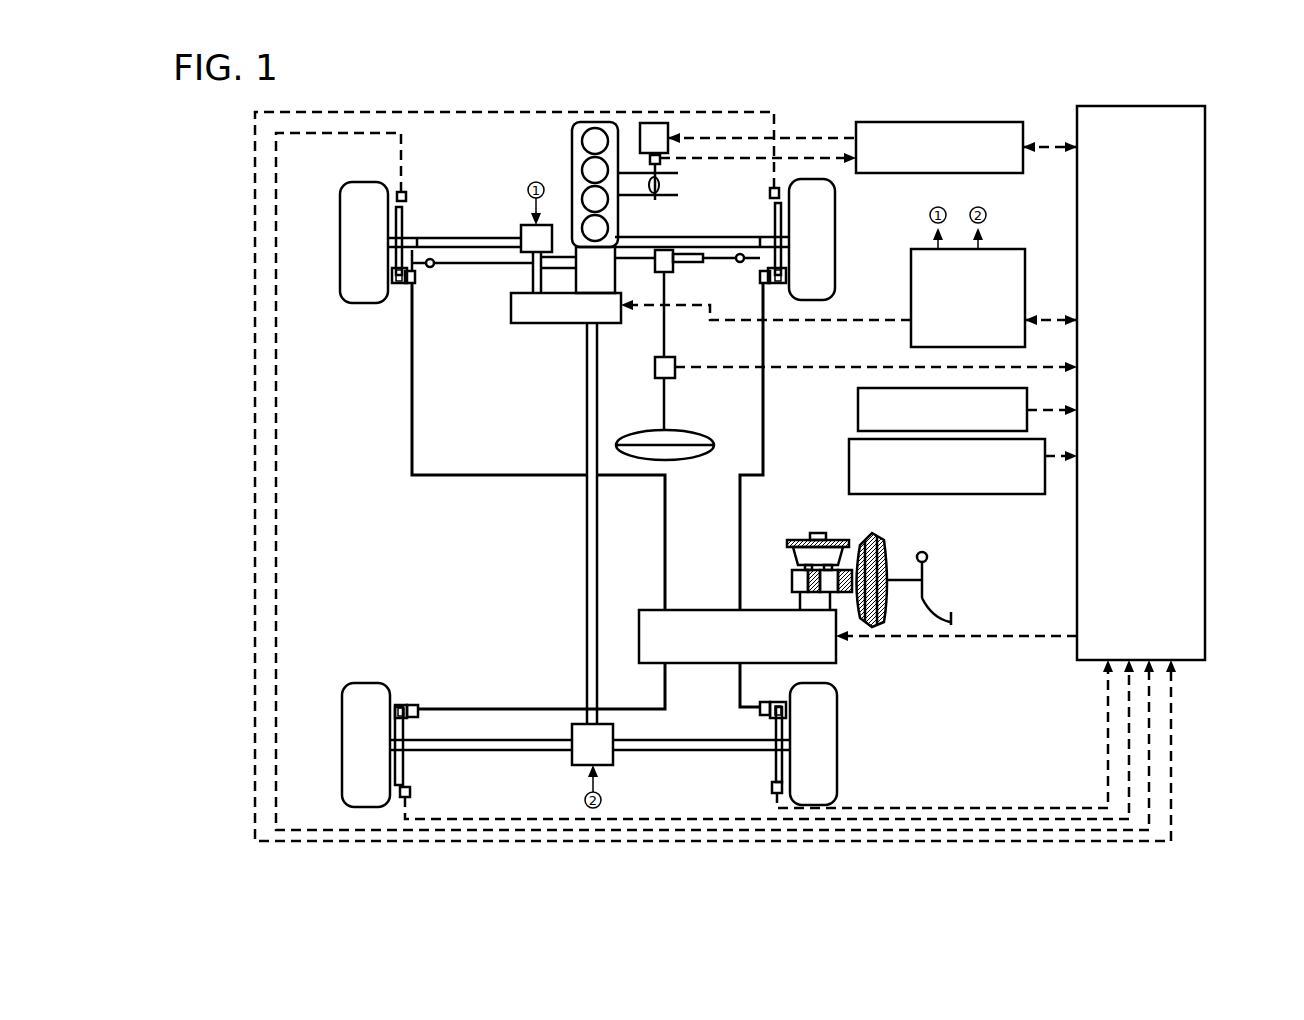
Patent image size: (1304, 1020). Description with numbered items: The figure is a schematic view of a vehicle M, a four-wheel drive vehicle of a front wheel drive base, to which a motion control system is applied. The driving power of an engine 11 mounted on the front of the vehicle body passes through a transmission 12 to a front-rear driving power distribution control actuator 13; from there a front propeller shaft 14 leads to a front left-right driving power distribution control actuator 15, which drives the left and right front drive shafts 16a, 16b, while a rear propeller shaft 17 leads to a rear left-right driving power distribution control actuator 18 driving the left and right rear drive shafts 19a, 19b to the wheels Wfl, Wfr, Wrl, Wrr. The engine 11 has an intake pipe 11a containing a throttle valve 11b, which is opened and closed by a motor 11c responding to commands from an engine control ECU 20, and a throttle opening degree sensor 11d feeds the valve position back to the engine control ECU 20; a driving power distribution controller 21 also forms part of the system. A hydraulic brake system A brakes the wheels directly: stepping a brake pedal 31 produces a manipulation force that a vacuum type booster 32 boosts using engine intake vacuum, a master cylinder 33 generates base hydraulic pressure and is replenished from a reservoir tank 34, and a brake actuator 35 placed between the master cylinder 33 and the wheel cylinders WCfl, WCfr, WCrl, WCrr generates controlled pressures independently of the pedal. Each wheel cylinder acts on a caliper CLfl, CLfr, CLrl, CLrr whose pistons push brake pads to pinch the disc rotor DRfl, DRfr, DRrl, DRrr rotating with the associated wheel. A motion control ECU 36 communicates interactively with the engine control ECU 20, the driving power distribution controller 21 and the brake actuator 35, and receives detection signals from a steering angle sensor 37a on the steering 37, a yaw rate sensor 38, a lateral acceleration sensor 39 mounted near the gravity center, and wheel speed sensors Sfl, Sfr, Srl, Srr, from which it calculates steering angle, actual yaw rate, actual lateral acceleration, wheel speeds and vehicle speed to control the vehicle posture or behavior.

The engine 11 is at (572, 170).
The intake pipe 11a is at (622, 190).
The throttle valve 11b is at (660, 188).
The motor 11c is at (655, 123).
The throttle opening degree sensor 11d is at (662, 160).
The transmission 12 is at (575, 296).
The front-rear driving power distribution control actuator 13 is at (511, 313).
The front propeller shaft 14 is at (533, 270).
The front left-right driving power distribution control actuator 15 is at (521, 229).
The left front drive shaft 16a is at (468, 240).
The right front drive shaft 16b is at (562, 233).
The rear propeller shaft 17 is at (585, 414).
The rear left-right driving power distribution control actuator 18 is at (613, 756).
The left rear drive shaft 19a is at (517, 751).
The right rear drive shaft 19b is at (662, 751).
The engine control ECU 20 is at (930, 122).
The driving power distribution controller 21 is at (1025, 276).
The brake pedal 31 is at (930, 592).
The vacuum type booster 32 is at (865, 537).
The master cylinder 33 is at (792, 585).
The reservoir tank 34 is at (816, 533).
The brake actuator 35 is at (720, 610).
The motion control ECU 36 is at (1205, 356).
The steering 37 is at (684, 432).
The steering angle sensor 37a is at (675, 357).
The yaw rate sensor 38 is at (858, 410).
The lateral acceleration sensor 39 is at (849, 460).
The vehicle M is at (355, 70).
The hydraulic brake system A is at (645, 597).
The front left wheel Wfl is at (340, 244).
The front right wheel Wfr is at (835, 240).
The rear left wheel Wrl is at (342, 746).
The rear right wheel Wrr is at (837, 745).
The front left wheel speed sensor Sfl is at (397, 192).
The front right wheel speed sensor Sfr is at (770, 194).
The rear left wheel speed sensor Srl is at (410, 794).
The rear right wheel speed sensor Srr is at (772, 790).
The front left disc rotor DRfl is at (398, 254).
The front right disc rotor DRfr is at (792, 252).
The rear left disc rotor DRrl is at (403, 772).
The rear right disc rotor DRrr is at (776, 773).
The front left caliper CLfl is at (395, 280).
The front right caliper CLfr is at (790, 278).
The rear left caliper CLrl is at (418, 714).
The rear right caliper CLrr is at (770, 712).
The front left wheel cylinder WCfl is at (408, 285).
The front right wheel cylinder WCfr is at (770, 285).
The rear left wheel cylinder WCrl is at (412, 704).
The rear right wheel cylinder WCrr is at (768, 702).